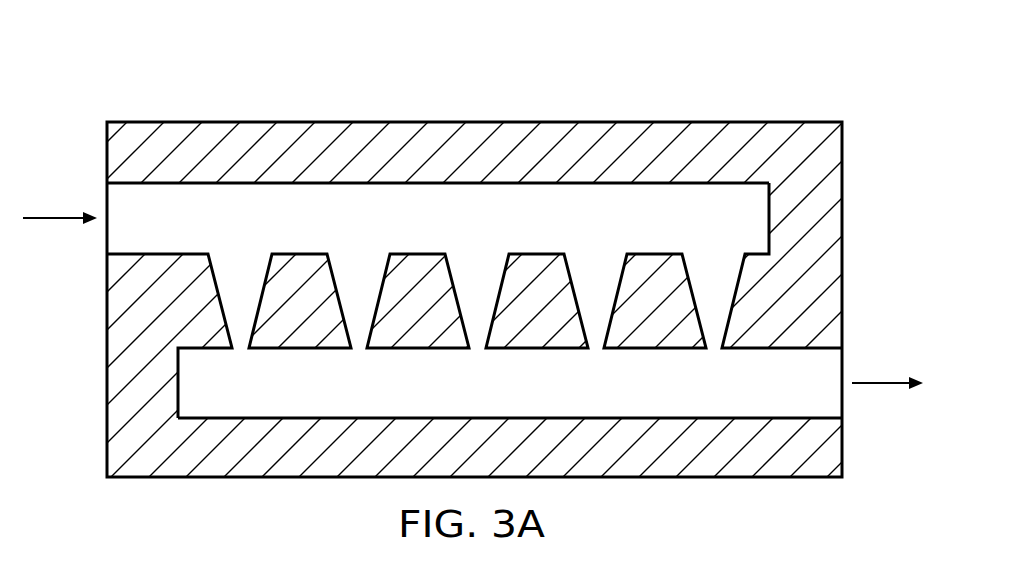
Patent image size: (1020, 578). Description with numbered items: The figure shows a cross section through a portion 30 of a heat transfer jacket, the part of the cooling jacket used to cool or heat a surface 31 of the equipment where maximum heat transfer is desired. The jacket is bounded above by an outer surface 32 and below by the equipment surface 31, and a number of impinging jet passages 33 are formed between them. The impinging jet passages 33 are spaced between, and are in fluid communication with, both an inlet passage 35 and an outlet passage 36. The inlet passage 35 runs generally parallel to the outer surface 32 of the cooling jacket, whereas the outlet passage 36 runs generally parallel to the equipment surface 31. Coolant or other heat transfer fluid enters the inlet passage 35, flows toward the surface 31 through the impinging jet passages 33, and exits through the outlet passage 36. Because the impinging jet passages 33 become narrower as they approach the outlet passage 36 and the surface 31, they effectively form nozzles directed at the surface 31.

The portion of heat transfer jacket 30 is at (597, 82).
The surface 31 is at (657, 490).
The outer surface 32 is at (320, 112).
The impinging jet passages 33 is at (240, 262).
The inlet passage 35 is at (52, 215).
The outlet passage 36 is at (881, 386).